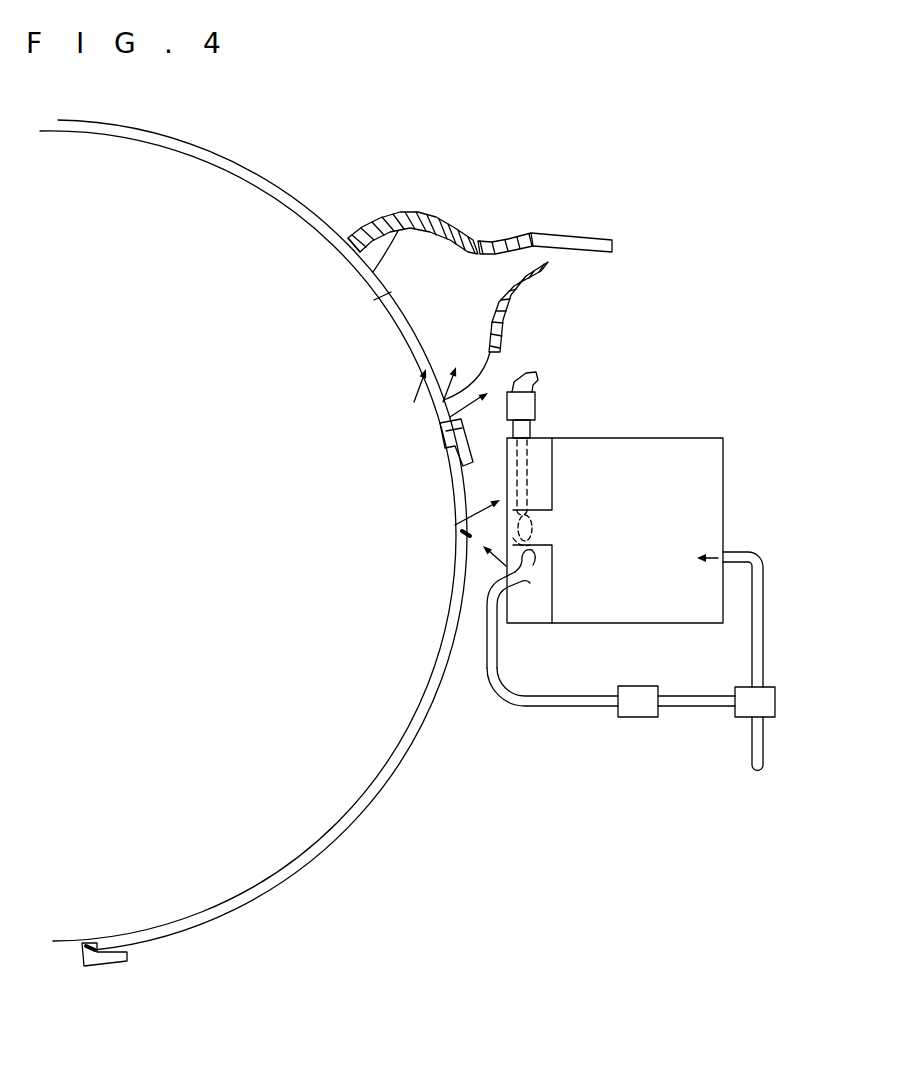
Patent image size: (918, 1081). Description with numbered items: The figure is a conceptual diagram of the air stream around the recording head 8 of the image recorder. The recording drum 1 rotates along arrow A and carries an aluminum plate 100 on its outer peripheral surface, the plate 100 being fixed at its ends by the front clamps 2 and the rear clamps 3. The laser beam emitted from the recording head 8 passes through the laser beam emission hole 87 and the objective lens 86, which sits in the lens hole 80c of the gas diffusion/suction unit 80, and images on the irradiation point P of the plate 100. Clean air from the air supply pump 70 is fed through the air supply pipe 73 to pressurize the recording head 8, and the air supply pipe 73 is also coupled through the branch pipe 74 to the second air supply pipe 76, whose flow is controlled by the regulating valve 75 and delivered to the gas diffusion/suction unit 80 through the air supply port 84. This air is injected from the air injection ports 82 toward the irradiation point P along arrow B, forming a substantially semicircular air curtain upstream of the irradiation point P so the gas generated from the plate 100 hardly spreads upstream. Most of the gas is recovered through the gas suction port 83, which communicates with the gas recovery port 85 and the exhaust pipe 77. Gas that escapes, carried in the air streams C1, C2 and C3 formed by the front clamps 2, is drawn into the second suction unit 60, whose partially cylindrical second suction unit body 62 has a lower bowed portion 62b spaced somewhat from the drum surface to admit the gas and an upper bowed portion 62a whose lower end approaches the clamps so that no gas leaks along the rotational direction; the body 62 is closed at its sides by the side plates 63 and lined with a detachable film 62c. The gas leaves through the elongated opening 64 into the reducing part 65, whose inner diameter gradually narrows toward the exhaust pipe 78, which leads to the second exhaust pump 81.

The recording drum 1 is at (213, 165).
The front clamps 2 is at (443, 433).
The rear clamps 3 is at (100, 966).
The recording head 8 is at (713, 433).
The second suction unit 60 is at (443, 166).
The second suction unit body 62 is at (417, 213).
The upper bowed portion 62a is at (360, 232).
The lower bowed portion 62b is at (512, 320).
The film 62c is at (390, 272).
The side plates 63 is at (385, 293).
The opening 64 is at (485, 277).
The reducing part 65 is at (507, 238).
The air supply pump 70 is at (758, 788).
The air supply pipe 73 is at (740, 552).
The branch pipe 74 is at (777, 700).
The regulating valve 75 is at (643, 717).
The second air supply pipe 76 is at (565, 707).
The exhaust pipe 77 is at (524, 376).
The exhaust pipe 78 is at (590, 238).
The gas diffusion/suction unit 80 is at (540, 437).
The lens hole 80c is at (553, 552).
The second exhaust pump 81 is at (617, 247).
The air injection ports 82 is at (513, 567).
The gas suction port 83 is at (510, 485).
The air supply port 84 is at (520, 592).
The gas recovery port 85 is at (539, 436).
The objective lens 86 is at (537, 522).
The laser beam emission hole 87 is at (562, 527).
The aluminum plate 100 is at (445, 675).
The arrow A is at (401, 624).
The arrow B is at (505, 567).
The irradiation point P is at (466, 533).
The air stream C1 is at (414, 384).
The air stream C2 is at (440, 405).
The air stream C3 is at (478, 407).